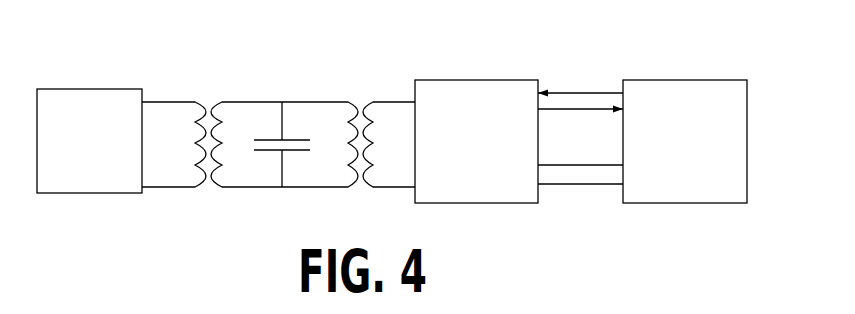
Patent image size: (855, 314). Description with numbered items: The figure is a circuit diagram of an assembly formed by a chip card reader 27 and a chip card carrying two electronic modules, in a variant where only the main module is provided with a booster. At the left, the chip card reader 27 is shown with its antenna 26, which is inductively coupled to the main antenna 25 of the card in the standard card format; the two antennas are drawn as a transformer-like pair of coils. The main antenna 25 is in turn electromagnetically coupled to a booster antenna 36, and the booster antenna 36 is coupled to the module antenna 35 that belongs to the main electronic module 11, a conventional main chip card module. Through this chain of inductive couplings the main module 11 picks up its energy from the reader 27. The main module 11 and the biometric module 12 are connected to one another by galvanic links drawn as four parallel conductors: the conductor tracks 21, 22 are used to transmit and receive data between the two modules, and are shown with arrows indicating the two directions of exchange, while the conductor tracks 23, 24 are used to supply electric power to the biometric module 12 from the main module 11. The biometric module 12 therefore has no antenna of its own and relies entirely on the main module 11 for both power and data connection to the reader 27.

The main chip card module 11 is at (477, 96).
The biometric module 12 is at (710, 129).
The conductor track 21 is at (565, 92).
The conductor track 22 is at (597, 109).
The conductor track 23 is at (570, 166).
The conductor track 24 is at (595, 184).
The main antenna 25 is at (215, 120).
The antenna of chip card reader 26 is at (200, 120).
The chip card reader 27 is at (80, 103).
The module antenna 35 is at (368, 110).
The booster antenna 36 is at (353, 120).